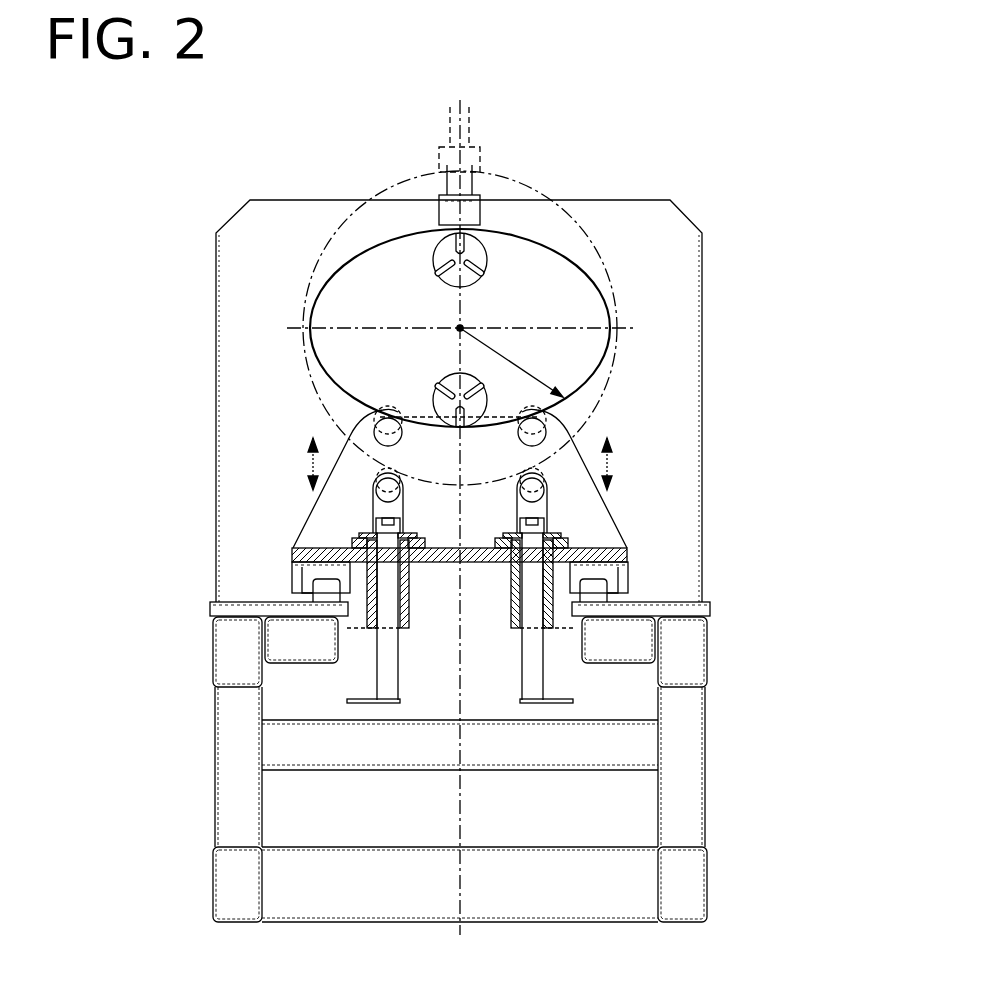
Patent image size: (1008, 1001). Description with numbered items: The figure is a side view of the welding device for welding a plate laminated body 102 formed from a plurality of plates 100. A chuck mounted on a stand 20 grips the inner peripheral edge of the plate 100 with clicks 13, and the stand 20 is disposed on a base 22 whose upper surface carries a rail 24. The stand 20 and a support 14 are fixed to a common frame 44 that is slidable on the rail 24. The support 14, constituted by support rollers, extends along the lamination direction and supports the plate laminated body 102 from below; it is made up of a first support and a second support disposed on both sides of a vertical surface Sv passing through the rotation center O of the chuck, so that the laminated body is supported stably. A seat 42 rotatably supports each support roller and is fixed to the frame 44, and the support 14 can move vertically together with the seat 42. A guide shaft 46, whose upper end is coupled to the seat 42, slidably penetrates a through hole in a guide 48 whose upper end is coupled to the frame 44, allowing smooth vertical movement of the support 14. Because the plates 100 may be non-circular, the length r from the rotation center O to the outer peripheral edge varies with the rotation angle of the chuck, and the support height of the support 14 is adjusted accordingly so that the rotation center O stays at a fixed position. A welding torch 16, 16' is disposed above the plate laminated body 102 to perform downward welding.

The click 13 is at (433, 249).
The support 14 is at (340, 507).
The welding torch 16 is at (362, 180).
The welding torch 16' is at (422, 139).
The stand 20 is at (685, 520).
The base 22 is at (230, 657).
The rail 24 is at (323, 590).
The seat 42 is at (372, 525).
The frame 44 is at (480, 557).
The guide shaft 46 is at (397, 668).
The guide 48 is at (408, 603).
The plate 100 is at (577, 218).
The plate laminated body 102 is at (607, 240).
The rotation center O is at (462, 326).
The length r is at (511, 362).
The vertical surface Sv is at (458, 792).